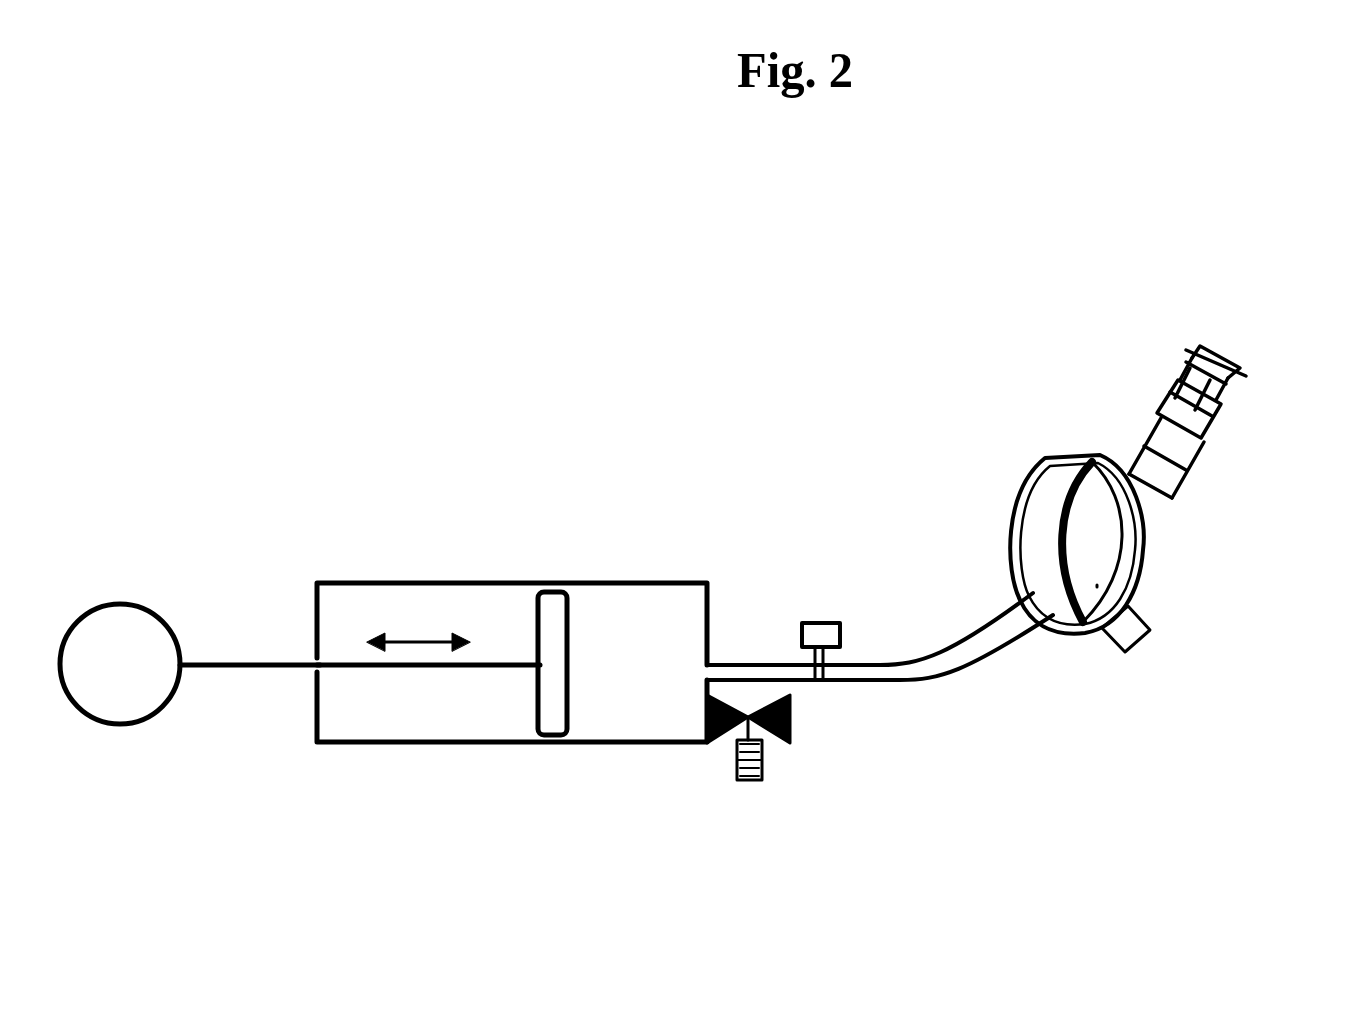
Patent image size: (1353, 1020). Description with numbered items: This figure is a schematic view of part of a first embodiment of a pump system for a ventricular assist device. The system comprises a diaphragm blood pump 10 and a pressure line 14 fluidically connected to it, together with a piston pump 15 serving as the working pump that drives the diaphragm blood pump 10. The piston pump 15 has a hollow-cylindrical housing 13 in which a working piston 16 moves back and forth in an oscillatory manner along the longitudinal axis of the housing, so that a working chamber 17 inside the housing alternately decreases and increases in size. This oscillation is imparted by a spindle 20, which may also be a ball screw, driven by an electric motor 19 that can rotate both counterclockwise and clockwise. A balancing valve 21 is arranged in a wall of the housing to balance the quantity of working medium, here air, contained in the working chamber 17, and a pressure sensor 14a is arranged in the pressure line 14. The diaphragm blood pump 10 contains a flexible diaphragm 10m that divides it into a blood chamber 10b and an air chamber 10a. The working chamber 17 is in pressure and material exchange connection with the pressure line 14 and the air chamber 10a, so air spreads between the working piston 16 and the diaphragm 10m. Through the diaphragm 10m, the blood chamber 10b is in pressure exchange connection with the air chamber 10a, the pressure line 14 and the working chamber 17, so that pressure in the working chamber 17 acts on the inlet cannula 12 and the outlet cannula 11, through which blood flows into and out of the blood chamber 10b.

The diaphragm blood pump 10 is at (1057, 450).
The air chamber 10a is at (1043, 535).
The blood chamber 10b is at (1140, 767).
The flexible diaphragm 10m is at (1220, 592).
The outlet cannula 11 is at (1273, 495).
The inlet cannula 12 is at (1227, 680).
The hollow-cylindrical housing 13 is at (687, 583).
The pressure line 14 is at (880, 665).
The pressure sensor 14a is at (812, 623).
The piston pump 15 is at (400, 583).
The working piston 16 is at (550, 607).
The working chamber 17 is at (608, 637).
The electric motor 19 is at (119, 622).
The spindle 20 is at (237, 665).
The balancing valve 21 is at (867, 755).